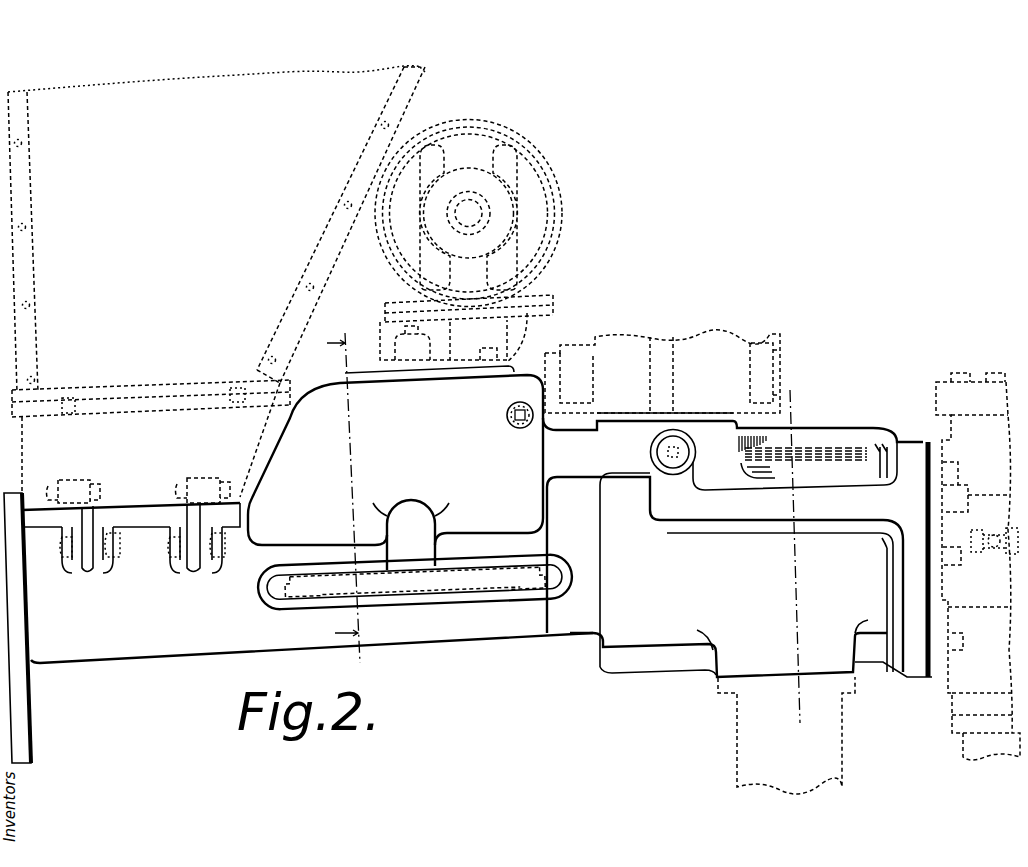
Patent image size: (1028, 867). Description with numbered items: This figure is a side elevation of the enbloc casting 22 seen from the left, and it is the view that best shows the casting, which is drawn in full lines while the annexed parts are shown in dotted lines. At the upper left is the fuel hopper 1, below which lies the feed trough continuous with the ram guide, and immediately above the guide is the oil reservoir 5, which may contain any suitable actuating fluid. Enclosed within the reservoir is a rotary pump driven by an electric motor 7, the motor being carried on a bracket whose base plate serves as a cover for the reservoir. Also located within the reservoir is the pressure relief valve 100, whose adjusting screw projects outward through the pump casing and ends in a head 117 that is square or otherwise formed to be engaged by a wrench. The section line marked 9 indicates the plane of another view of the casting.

The fuel hopper 1 is at (340, 193).
The oil reservoir 5 is at (330, 385).
The electric motor 7 is at (520, 142).
The section line 9- 9 is at (351, 494).
The enbloc casting 22 is at (118, 650).
The pressure relief valve 100 is at (513, 426).
The head 117 is at (510, 407).